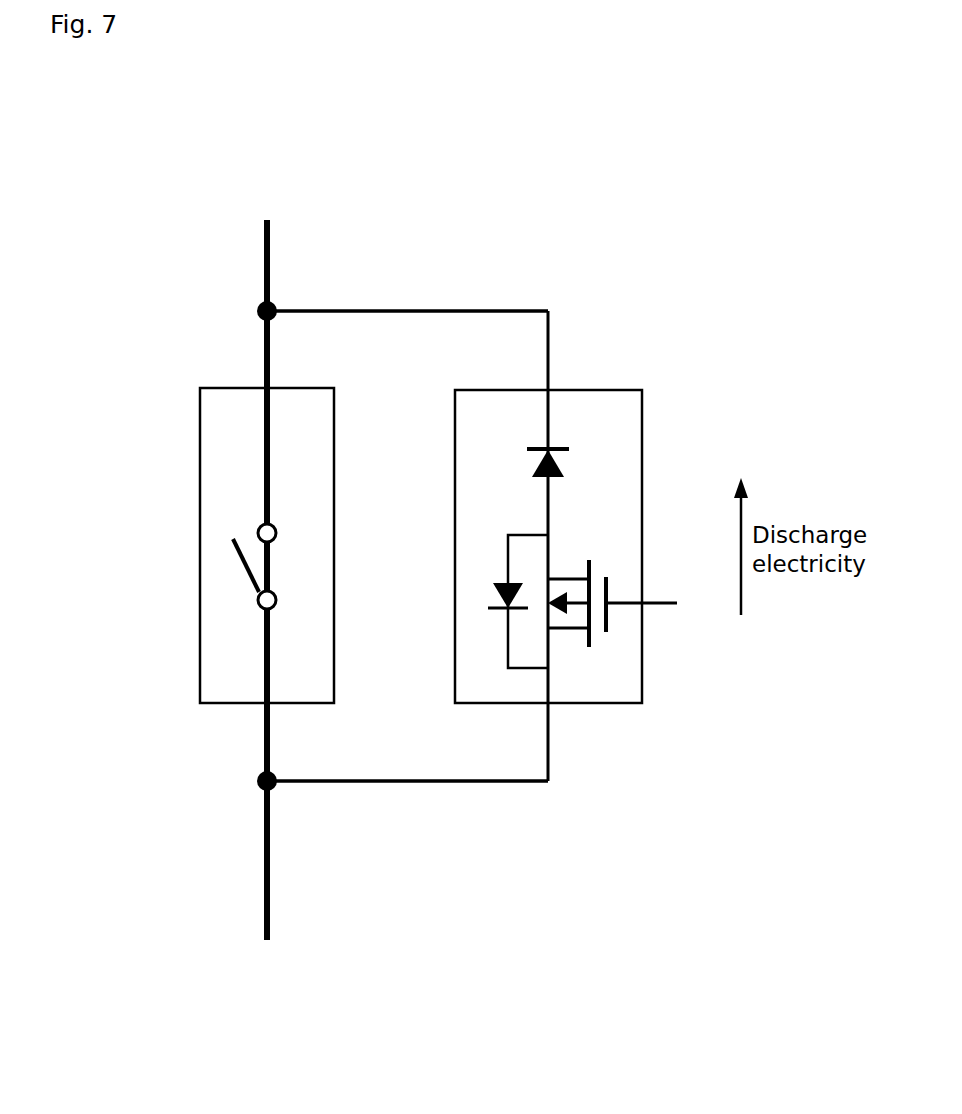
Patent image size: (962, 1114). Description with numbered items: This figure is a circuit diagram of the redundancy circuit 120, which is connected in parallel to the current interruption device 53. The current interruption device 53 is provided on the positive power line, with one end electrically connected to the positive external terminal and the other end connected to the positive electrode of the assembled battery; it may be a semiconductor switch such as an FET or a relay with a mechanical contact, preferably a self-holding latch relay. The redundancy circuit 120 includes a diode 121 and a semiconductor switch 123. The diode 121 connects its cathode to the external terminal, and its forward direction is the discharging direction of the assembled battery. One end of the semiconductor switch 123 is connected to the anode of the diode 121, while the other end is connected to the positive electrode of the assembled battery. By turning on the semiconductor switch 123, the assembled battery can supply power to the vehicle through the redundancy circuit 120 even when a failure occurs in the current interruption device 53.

The current interruption device 53 is at (200, 585).
The redundancy circuit 120 is at (615, 390).
The diode 121 is at (560, 465).
The semiconductor switch 123 is at (606, 622).